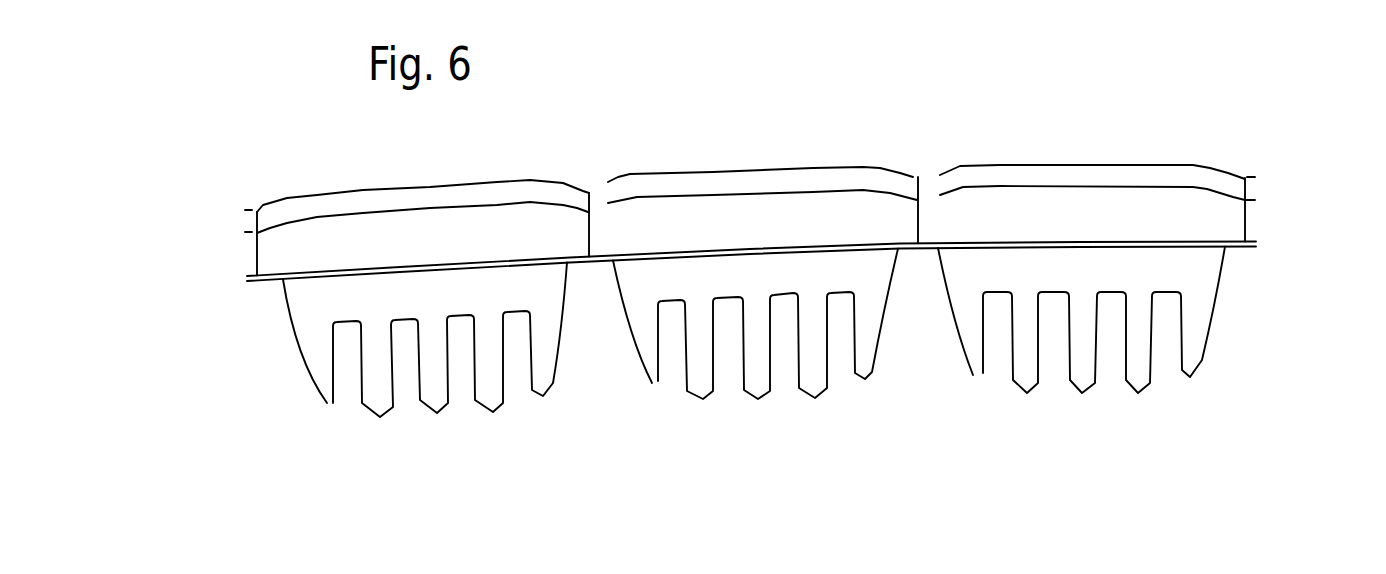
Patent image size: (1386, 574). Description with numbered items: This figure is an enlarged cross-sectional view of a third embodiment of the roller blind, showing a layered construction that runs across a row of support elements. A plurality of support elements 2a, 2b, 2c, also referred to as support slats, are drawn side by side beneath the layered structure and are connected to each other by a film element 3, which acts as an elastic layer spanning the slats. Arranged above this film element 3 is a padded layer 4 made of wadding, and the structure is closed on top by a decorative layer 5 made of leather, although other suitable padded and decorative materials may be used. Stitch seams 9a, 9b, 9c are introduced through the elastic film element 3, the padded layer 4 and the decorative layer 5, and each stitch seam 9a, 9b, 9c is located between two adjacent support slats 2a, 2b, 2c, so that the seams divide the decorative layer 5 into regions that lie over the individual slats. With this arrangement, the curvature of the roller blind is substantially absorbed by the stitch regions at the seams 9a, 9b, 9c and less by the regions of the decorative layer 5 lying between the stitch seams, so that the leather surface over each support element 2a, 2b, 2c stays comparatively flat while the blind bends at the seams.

The support element 2a is at (550, 383).
The support element 2b is at (875, 367).
The support element 2c is at (1203, 361).
The film element 3 is at (1252, 247).
The padded layer 4 is at (290, 253).
The decorative layer 5 is at (307, 203).
The stitch seam 9a is at (590, 228).
The stitch seam 9b is at (918, 218).
The stitch seam 9c is at (1247, 217).